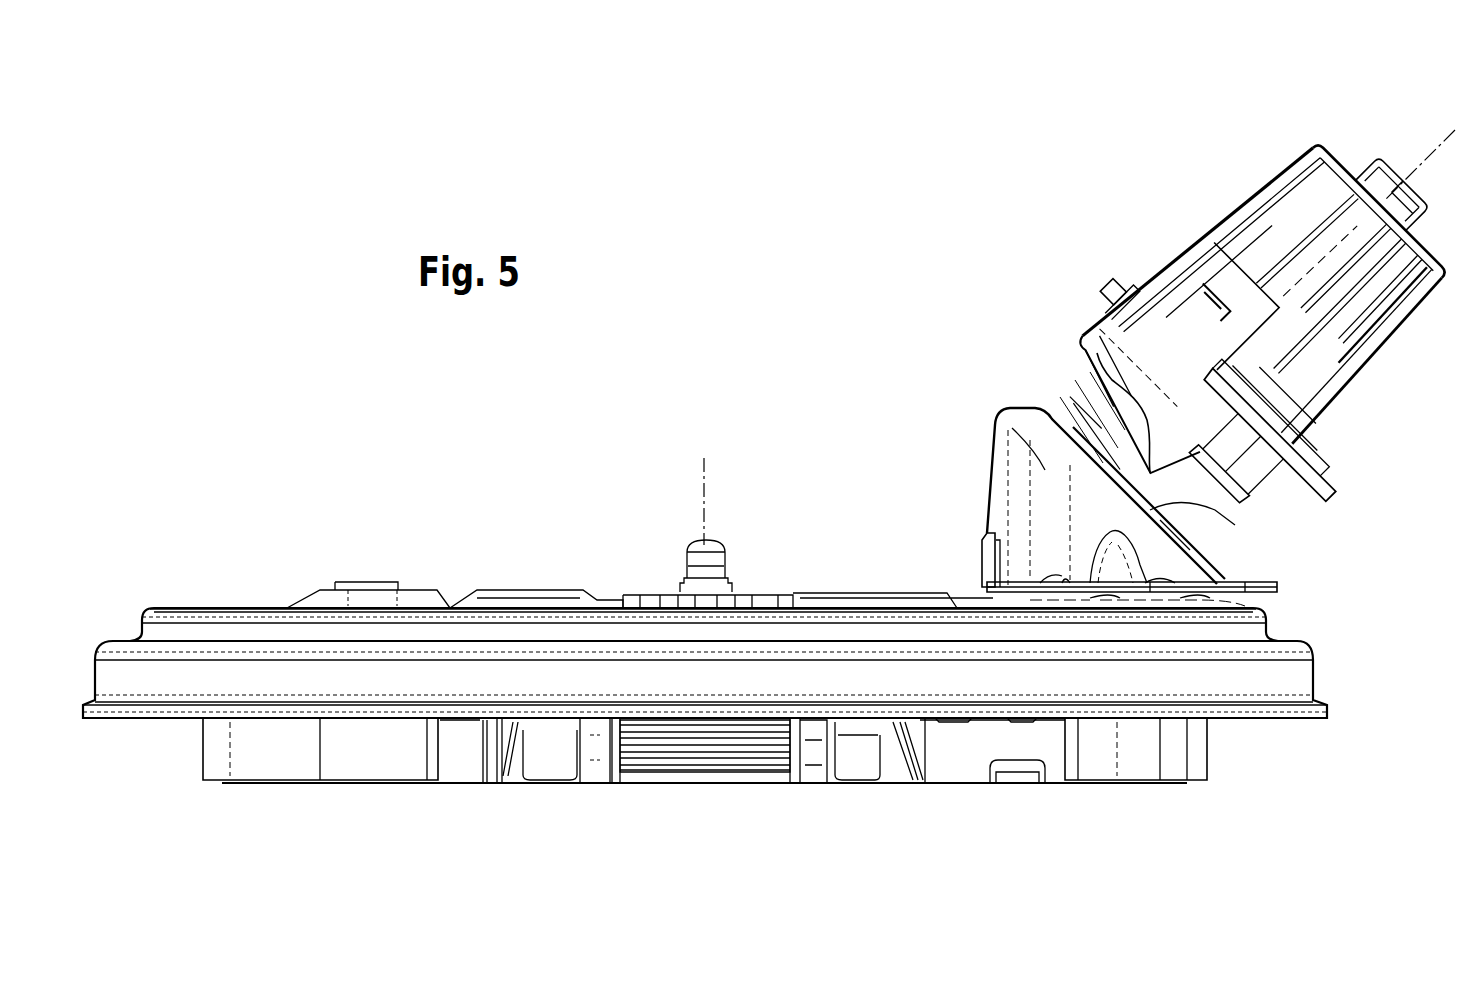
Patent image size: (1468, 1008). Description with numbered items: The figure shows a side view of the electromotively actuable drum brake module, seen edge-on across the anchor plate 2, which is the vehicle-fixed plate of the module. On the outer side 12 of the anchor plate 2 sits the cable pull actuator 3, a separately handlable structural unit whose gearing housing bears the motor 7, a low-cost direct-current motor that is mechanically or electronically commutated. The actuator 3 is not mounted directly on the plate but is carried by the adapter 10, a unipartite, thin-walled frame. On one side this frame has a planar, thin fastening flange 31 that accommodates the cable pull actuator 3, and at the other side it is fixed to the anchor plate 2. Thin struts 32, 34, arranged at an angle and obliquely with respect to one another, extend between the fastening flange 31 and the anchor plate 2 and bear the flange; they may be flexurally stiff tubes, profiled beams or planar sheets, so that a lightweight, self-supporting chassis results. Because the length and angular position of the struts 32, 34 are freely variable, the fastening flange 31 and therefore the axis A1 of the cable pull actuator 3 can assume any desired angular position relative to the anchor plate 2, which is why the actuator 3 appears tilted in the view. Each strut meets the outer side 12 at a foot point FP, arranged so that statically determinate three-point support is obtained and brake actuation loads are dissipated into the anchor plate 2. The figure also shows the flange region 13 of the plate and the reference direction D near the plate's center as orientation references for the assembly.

The anchor plate 2 is at (262, 635).
The outer side of the anchor plate 12 is at (217, 606).
The flange 13 is at (149, 722).
The axis of pin D is at (704, 483).
The foot point FP is at (1065, 583).
The adapter 10 is at (970, 456).
The strut 32 is at (985, 495).
The strut 34 is at (1006, 425).
The fastening flange 31 is at (1160, 505).
The cable pull actuator 3 is at (1167, 185).
The motor 7 is at (1263, 203).
The axis of the cable pull actuator A1 is at (1432, 157).